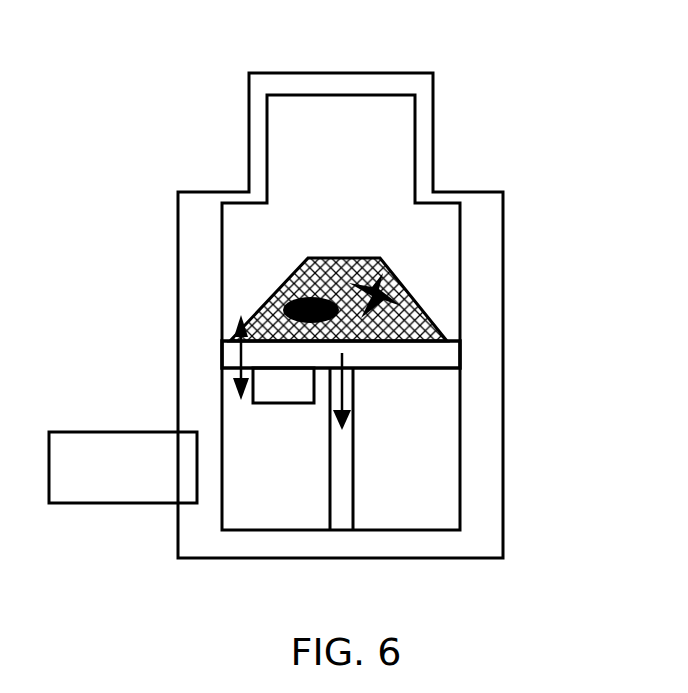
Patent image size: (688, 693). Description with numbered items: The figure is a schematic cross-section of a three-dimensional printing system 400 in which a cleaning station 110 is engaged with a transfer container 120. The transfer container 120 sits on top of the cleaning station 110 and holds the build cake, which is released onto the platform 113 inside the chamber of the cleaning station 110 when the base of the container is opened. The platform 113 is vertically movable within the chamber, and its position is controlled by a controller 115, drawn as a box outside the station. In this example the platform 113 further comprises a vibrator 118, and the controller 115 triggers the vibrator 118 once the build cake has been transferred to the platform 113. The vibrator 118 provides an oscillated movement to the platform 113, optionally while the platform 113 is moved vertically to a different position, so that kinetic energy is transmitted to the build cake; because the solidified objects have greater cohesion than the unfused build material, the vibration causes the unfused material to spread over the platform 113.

The sample processing system 400 is at (325, 283).
The cleaning station 110 is at (520, 396).
The transfer container 120 is at (450, 159).
The platform 113 is at (228, 351).
The vibrator 118 is at (273, 359).
The controller 115 is at (123, 467).